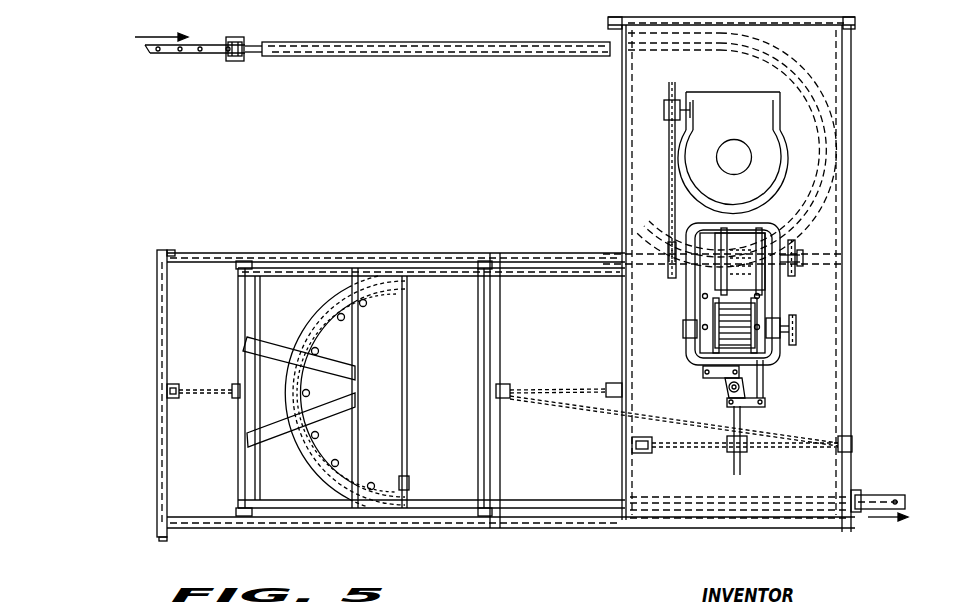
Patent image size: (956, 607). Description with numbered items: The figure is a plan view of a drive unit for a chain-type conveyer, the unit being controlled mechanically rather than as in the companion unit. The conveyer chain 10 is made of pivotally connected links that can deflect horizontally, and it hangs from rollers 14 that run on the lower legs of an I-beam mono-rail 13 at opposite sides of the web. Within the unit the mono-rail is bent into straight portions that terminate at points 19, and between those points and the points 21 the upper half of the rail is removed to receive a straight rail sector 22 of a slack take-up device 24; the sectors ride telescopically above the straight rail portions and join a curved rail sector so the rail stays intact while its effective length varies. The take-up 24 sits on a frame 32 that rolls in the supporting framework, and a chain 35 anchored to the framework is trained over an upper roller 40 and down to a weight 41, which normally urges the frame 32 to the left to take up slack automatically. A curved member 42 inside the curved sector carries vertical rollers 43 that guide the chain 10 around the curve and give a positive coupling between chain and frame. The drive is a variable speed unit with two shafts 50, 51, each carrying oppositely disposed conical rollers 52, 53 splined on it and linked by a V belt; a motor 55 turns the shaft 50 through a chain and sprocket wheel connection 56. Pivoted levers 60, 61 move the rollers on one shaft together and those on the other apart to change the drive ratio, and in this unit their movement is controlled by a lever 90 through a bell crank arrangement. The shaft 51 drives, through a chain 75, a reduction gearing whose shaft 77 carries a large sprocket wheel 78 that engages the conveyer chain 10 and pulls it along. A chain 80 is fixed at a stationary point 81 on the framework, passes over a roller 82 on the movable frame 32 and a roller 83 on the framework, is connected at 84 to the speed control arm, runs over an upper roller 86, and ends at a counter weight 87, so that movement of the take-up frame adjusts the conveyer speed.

The chain 10 is at (197, 43).
The mono-rail 13 is at (852, 175).
The roller 14 is at (236, 62).
The points of termination 19 is at (536, 277).
The points 21 is at (700, 497).
The straight rail sector 22 is at (432, 281).
The slack take-up device 24 is at (296, 327).
The frame 32 is at (482, 433).
The chain 35 is at (213, 388).
The upper roller 40 is at (158, 388).
The weight 41 is at (180, 398).
The curved member 42 is at (335, 435).
The rollers 43 is at (411, 480).
The shaft 50 is at (685, 330).
The shaft 51 is at (660, 272).
The conical roller 52 is at (700, 315).
The conical roller 53 is at (782, 352).
The motor 55 is at (782, 282).
The chain and sprocket wheel connection 56 is at (785, 308).
The lever 60 is at (703, 352).
The lever 61 is at (766, 380).
The chain 75 is at (670, 178).
The shaft 77 is at (727, 168).
The large sprocket wheel 78 is at (622, 103).
The chain 80 is at (605, 410).
The stationary point 81 is at (613, 382).
The roller 82 is at (513, 383).
The roller 83 is at (840, 445).
The connection 84 is at (741, 447).
The upper roller 86 is at (640, 451).
The counter weight 87 is at (652, 440).
The lever 90 is at (745, 410).